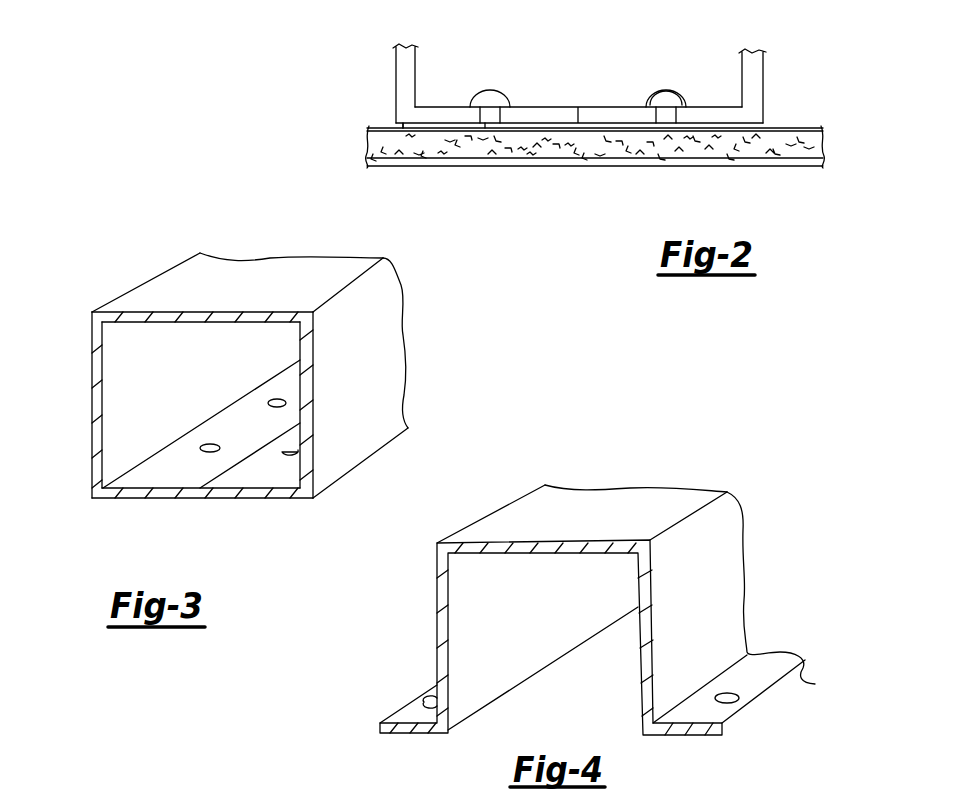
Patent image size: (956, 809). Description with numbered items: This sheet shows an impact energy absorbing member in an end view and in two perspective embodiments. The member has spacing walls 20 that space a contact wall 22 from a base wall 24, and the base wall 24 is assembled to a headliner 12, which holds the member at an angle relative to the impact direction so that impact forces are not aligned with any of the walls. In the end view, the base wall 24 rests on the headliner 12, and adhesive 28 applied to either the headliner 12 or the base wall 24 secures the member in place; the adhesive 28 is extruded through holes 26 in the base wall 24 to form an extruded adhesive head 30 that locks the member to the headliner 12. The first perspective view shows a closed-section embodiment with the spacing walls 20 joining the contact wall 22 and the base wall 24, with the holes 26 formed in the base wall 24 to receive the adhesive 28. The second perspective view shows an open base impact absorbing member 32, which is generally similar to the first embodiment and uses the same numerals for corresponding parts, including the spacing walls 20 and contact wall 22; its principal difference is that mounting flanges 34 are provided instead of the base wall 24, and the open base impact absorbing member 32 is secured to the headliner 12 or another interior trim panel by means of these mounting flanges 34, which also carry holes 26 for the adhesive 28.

In FIG. 2, the headliner 12 is at (727, 150).
In FIG. 2, the spacing walls 20 is at (398, 96).
In FIG. 3, the spacing walls 20 is at (120, 375).
In FIG. 4, the spacing walls 20 is at (465, 603).
In FIG. 3, the contact wall 22 is at (263, 283).
In FIG. 4, the contact wall 22 is at (577, 510).
In FIG. 2, the base wall 24 is at (610, 112).
In FIG. 3, the base wall 24 is at (245, 475).
In FIG. 2, the holes 26 is at (482, 117).
In FIG. 3, the holes 26 is at (273, 403).
In FIG. 4, the holes 26 is at (727, 693).
In FIG. 2, the adhesive 28 is at (607, 130).
In FIG. 2, the extruded adhesive head 30 is at (660, 93).
In FIG. 4, the open base impact absorbing member 32 is at (683, 486).
In FIG. 4, the mounting flanges 34 is at (402, 712).